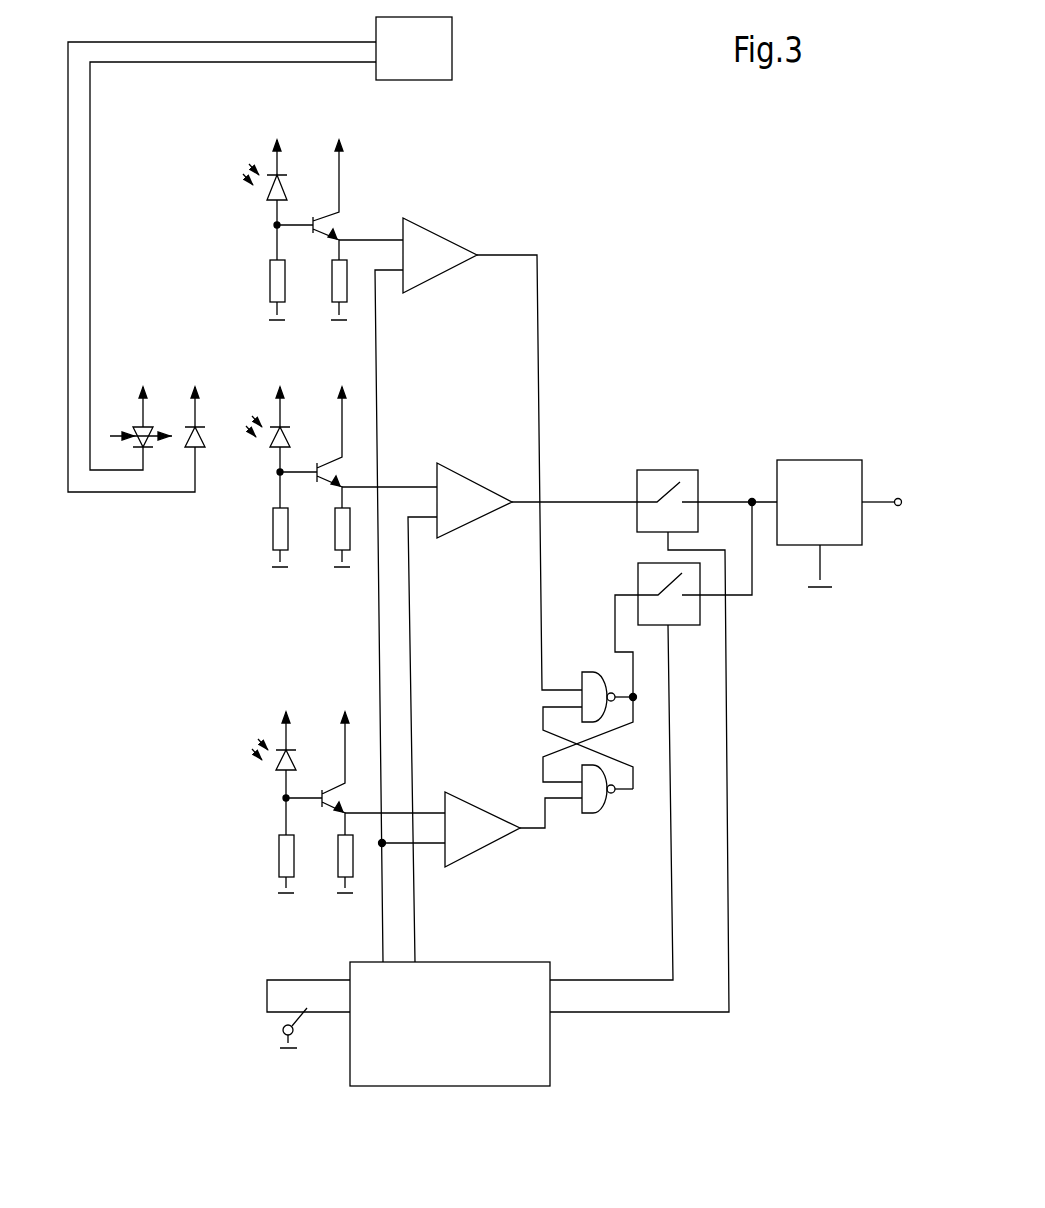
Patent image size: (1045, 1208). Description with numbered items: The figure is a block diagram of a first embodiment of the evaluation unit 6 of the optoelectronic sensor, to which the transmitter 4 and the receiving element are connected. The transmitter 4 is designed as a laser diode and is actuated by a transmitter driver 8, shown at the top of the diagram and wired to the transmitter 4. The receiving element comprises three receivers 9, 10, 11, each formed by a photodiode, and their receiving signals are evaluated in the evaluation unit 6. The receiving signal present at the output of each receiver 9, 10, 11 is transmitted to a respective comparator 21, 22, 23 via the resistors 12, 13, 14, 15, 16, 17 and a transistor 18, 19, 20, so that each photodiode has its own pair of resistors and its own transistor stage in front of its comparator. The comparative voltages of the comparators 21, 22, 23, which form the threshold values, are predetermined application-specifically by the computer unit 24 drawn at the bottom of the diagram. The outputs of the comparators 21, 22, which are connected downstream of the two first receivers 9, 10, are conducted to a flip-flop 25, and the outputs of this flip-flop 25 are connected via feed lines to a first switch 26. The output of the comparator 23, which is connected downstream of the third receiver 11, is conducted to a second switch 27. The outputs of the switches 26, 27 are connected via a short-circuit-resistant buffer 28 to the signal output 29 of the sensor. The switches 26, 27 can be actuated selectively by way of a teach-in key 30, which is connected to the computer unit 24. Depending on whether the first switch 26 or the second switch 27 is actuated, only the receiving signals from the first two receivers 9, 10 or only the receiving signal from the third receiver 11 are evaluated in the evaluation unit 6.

The transmitter 4 is at (168, 373).
The evaluation unit 6 is at (633, 174).
The transmitter driver 8 is at (438, 55).
The receiver 9 is at (240, 153).
The receiver 10 is at (253, 728).
The receiver 11 is at (250, 398).
The resistor 12 is at (277, 283).
The resistor 13 is at (335, 287).
The resistor 14 is at (285, 863).
The resistor 15 is at (352, 867).
The resistor 16 is at (280, 535).
The resistor 17 is at (343, 535).
The transistor 18 is at (323, 213).
The transistor 19 is at (333, 780).
The transistor 20 is at (327, 458).
The comparator 21 is at (445, 250).
The comparator 22 is at (485, 822).
The comparator 23 is at (477, 498).
The computer unit 24 is at (498, 1063).
The flip-flop 25 is at (653, 718).
The first switch 26 is at (652, 577).
The second switch 27 is at (648, 480).
The short-circuit-resistant buffer 28 is at (840, 532).
The signal output 29 is at (898, 490).
The teach-in key 30 is at (270, 1030).